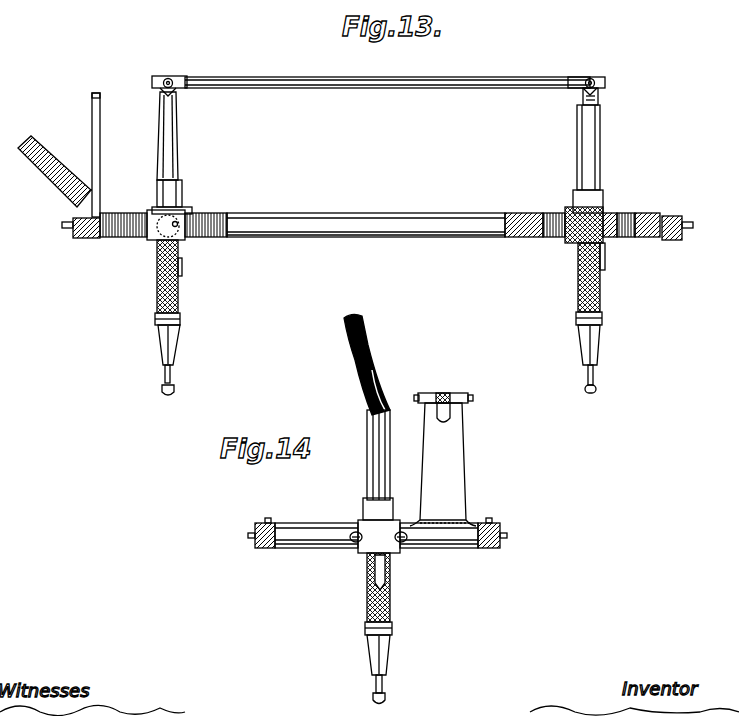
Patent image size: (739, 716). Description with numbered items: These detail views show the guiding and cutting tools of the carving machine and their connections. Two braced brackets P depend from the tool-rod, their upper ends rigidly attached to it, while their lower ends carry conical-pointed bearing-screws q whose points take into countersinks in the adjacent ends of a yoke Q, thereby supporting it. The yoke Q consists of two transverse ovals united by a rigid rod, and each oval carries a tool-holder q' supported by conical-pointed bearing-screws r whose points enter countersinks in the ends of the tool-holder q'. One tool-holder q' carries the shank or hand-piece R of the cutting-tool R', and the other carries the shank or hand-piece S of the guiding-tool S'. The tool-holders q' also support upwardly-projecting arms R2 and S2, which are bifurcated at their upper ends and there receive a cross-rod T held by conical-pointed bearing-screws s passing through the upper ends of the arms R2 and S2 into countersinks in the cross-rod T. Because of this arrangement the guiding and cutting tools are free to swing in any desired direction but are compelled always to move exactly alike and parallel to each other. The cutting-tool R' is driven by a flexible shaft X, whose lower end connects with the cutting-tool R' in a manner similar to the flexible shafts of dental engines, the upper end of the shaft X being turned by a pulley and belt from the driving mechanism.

In FIG. 13, the cross-rod T is at (436, 88).
In FIG. 14, the cross-rod T is at (448, 394).
In FIG. 13, the conical-pointed bearing-screws s is at (172, 79).
In FIG. 14, the conical-pointed bearing-screws s is at (415, 394).
In FIG. 13, the upwardly-projecting arm R2 is at (176, 122).
In FIG. 14, the upwardly-projecting arm R2 is at (443, 464).
In FIG. 13, the braced bracket P is at (50, 158).
In FIG. 13, the yoke Q is at (396, 236).
In FIG. 14, the yoke Q is at (290, 548).
In FIG. 13, the conical-pointed bearing-screw q is at (386, 233).
In FIG. 13, the conical-pointed bearing-screw r is at (166, 226).
In FIG. 14, the conical-pointed bearing-screw r is at (248, 538).
In FIG. 13, the tool-holder q' is at (370, 212).
In FIG. 14, the tool-holder q' is at (368, 537).
In FIG. 13, the upwardly-projecting arm S2 is at (597, 100).
In FIG. 13, the shank or hand-piece of the guiding-tool S is at (580, 235).
In FIG. 13, the guiding-tool S' is at (603, 379).
In FIG. 13, the shank or hand-piece of the cutting-tool R is at (149, 302).
In FIG. 14, the shank or hand-piece of the cutting-tool R is at (388, 614).
In FIG. 13, the cutting-tool R' is at (182, 379).
In FIG. 14, the cutting-tool R' is at (392, 688).
In FIG. 14, the flexible shaft X is at (362, 330).